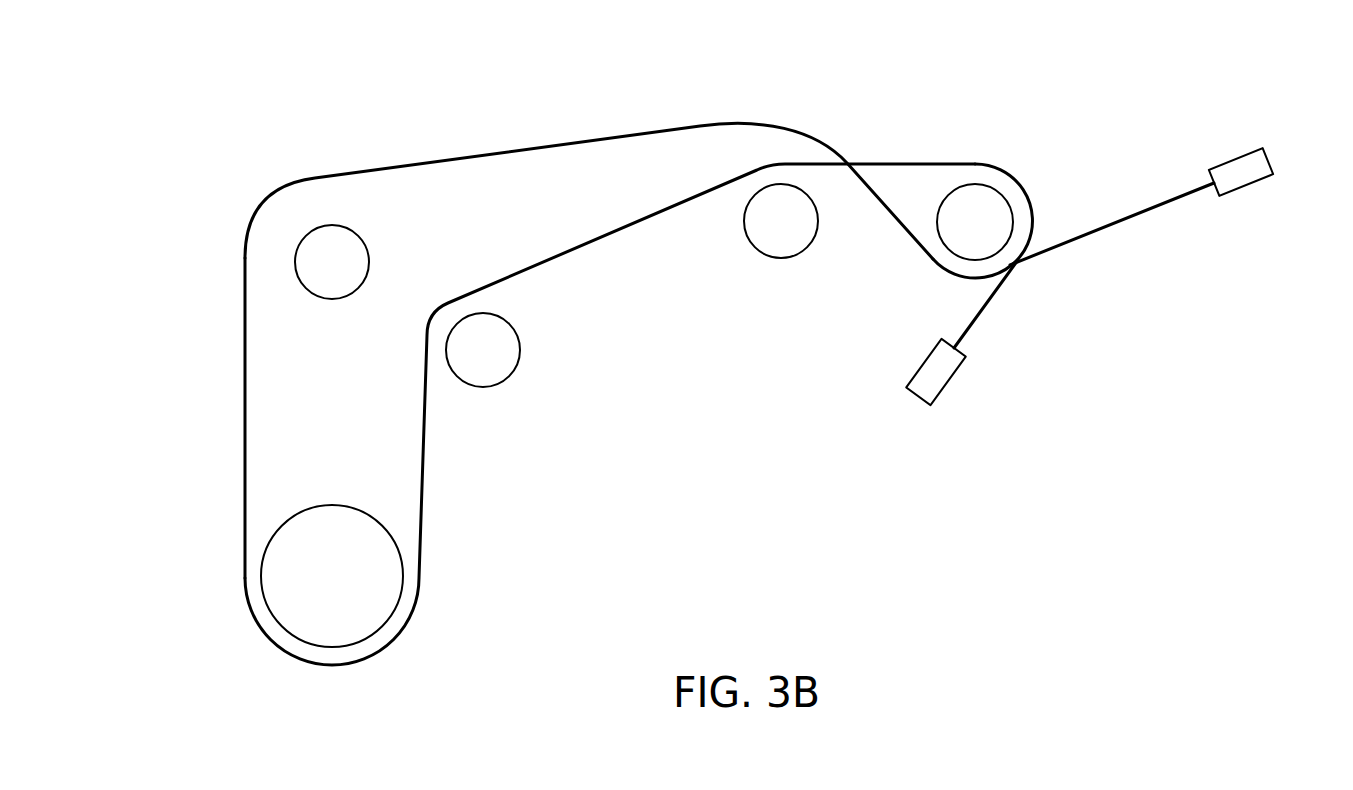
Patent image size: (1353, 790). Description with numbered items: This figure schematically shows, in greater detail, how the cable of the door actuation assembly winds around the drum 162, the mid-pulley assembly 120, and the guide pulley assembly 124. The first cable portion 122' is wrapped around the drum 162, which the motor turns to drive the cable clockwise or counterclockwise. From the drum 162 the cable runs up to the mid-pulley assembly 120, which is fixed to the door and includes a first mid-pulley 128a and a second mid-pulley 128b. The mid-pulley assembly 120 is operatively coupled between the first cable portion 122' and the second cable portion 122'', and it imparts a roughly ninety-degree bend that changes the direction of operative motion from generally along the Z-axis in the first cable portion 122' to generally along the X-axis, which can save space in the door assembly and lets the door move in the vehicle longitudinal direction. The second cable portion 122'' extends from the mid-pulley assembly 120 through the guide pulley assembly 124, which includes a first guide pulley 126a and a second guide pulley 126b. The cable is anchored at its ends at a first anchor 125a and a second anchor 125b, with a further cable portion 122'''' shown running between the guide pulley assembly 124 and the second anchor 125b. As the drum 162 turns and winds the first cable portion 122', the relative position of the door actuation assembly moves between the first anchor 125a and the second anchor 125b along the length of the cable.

The mid-pulley assembly 120 is at (262, 170).
The first cable portion 122' is at (182, 418).
The second cable portion 122'' is at (1112, 232).
The fourth belt segment 122'''' is at (1016, 304).
The guide pulley assembly 124 is at (998, 137).
The first anchor 125a is at (1262, 163).
The second anchor 125b is at (942, 377).
The first guide pulley 126a is at (997, 208).
The second guide pulley 126b is at (780, 248).
The first mid-pulley 128a is at (356, 254).
The second mid-pulley 128b is at (483, 378).
The drum 162 is at (331, 514).